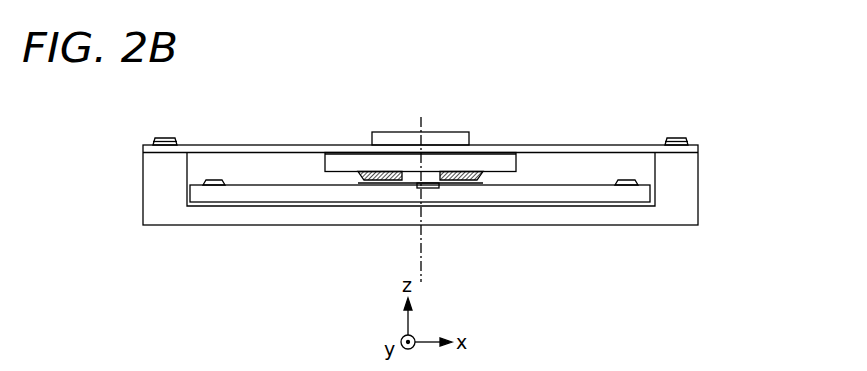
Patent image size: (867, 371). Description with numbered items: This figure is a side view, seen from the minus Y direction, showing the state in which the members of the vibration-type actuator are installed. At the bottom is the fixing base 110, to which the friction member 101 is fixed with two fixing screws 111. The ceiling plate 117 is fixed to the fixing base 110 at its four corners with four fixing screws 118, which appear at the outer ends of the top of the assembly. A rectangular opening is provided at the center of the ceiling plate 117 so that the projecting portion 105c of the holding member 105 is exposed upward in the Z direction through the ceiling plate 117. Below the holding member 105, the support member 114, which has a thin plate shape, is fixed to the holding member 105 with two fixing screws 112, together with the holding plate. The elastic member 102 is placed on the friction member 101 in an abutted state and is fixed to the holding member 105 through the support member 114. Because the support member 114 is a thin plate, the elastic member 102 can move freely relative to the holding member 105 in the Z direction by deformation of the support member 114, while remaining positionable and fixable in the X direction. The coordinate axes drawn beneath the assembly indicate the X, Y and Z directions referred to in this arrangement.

The fixing base 110 is at (698, 205).
The friction member 101 is at (568, 192).
The fixing screws 118 is at (170, 138).
The fixing screws 111 is at (218, 180).
The holding member 105 is at (511, 152).
The projecting portion 105c is at (458, 132).
The ceiling plate 117 is at (342, 150).
The support member 114 is at (367, 183).
The fixing screws 112 is at (436, 188).
The elastic member 102 is at (393, 183).